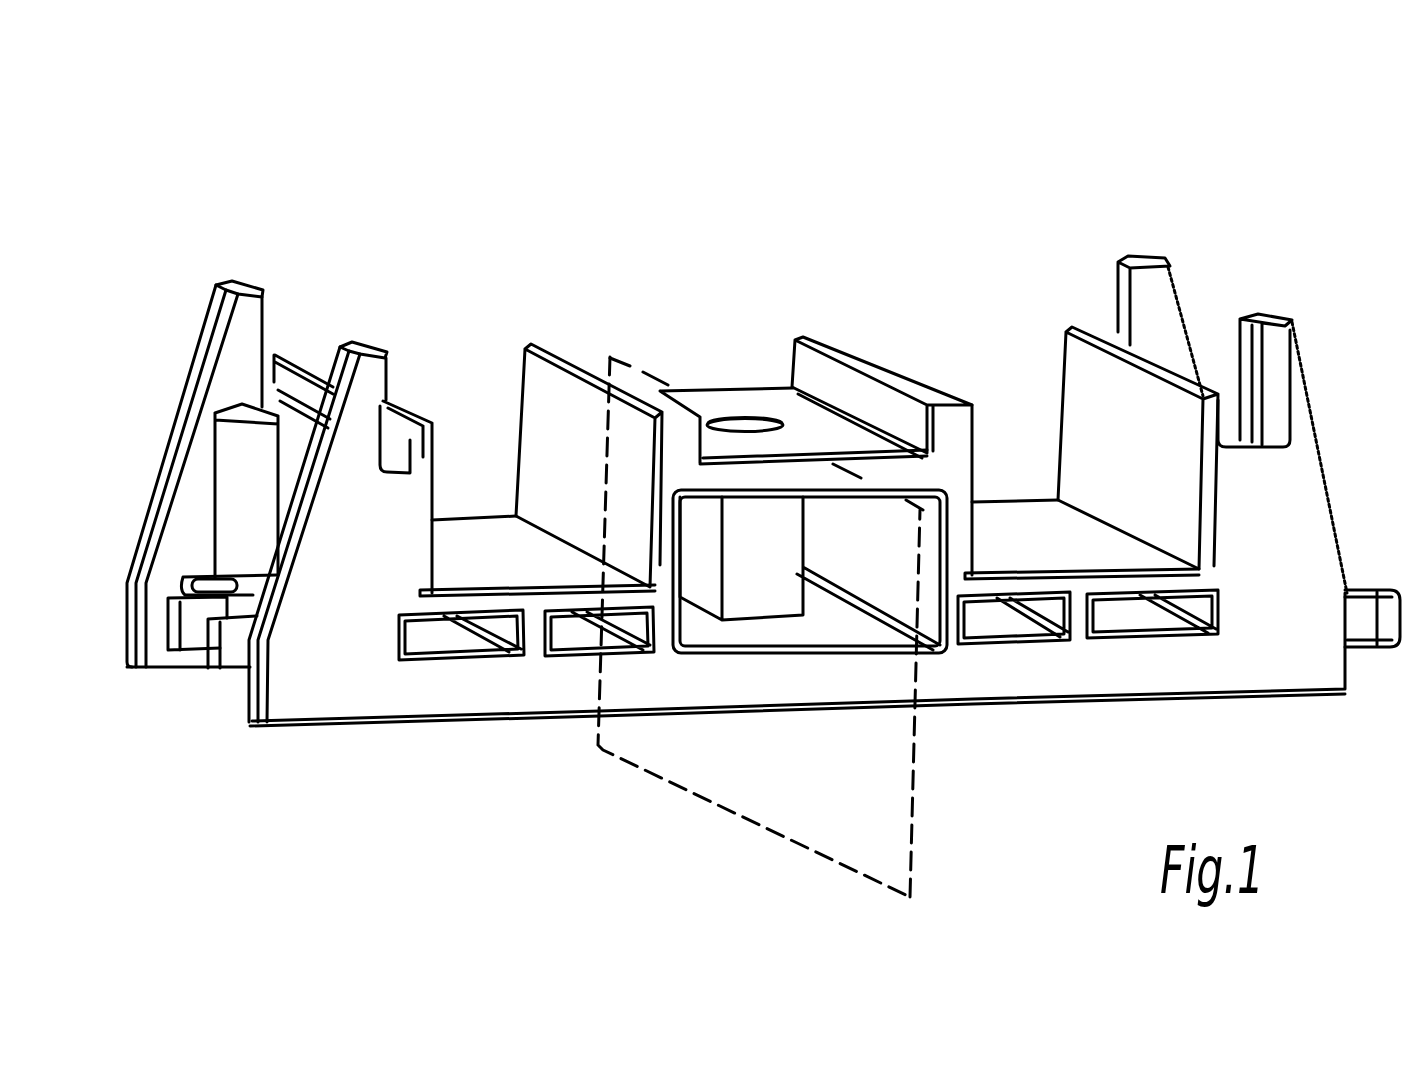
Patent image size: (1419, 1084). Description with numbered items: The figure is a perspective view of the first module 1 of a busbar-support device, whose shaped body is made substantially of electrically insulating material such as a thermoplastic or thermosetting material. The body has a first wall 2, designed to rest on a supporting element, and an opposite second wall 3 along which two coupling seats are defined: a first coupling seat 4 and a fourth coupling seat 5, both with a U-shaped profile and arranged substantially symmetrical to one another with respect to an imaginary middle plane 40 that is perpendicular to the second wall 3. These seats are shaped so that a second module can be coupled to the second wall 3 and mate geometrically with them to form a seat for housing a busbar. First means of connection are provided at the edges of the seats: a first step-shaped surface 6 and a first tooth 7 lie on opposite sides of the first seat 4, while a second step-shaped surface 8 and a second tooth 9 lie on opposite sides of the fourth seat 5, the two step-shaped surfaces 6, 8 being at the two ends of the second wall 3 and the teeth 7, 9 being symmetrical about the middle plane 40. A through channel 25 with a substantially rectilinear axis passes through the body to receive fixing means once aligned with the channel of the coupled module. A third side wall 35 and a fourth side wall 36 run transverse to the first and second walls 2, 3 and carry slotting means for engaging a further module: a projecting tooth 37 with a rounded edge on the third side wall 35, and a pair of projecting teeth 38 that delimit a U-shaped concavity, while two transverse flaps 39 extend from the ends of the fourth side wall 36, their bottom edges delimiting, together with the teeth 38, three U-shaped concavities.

The first module 1 is at (1230, 295).
The first wall 2 is at (1099, 706).
The second wall 3 is at (716, 197).
The first coupling seat 4 is at (470, 540).
The fourth coupling seat 5 is at (1015, 524).
The first step-shaped surface 6 is at (301, 398).
The first tooth 7 is at (555, 352).
The second step-shaped surface 8 is at (1225, 414).
The second tooth 9 is at (838, 345).
The through channel 25 is at (757, 424).
The third side wall 35 is at (1100, 333).
The fourth side wall 36 is at (275, 492).
The projecting tooth 37 is at (1383, 590).
The pair of projecting teeth 38 is at (177, 637).
The transverse flaps 39 is at (165, 470).
The middle plane 40 is at (886, 826).